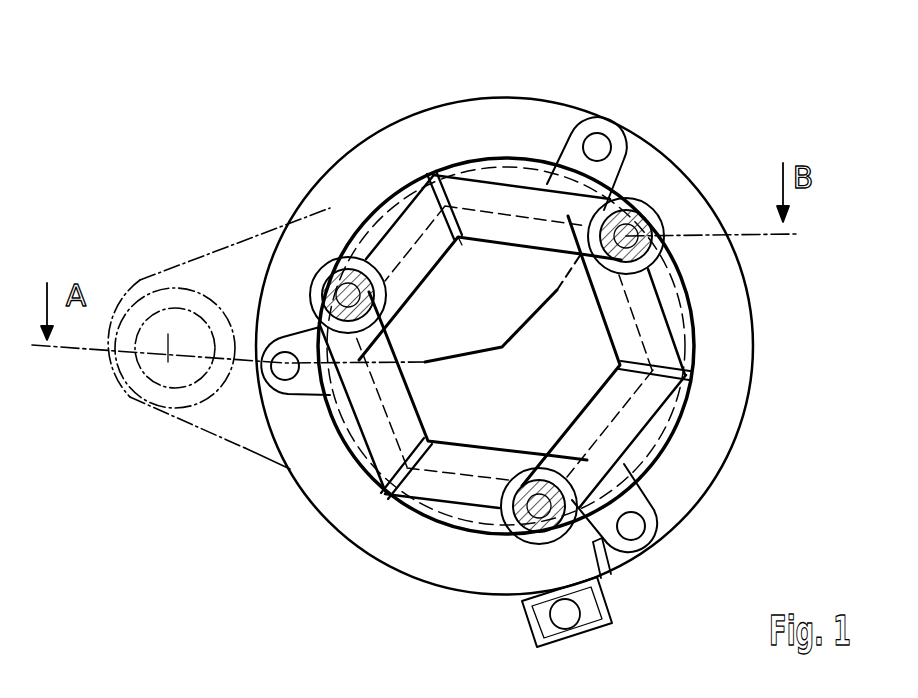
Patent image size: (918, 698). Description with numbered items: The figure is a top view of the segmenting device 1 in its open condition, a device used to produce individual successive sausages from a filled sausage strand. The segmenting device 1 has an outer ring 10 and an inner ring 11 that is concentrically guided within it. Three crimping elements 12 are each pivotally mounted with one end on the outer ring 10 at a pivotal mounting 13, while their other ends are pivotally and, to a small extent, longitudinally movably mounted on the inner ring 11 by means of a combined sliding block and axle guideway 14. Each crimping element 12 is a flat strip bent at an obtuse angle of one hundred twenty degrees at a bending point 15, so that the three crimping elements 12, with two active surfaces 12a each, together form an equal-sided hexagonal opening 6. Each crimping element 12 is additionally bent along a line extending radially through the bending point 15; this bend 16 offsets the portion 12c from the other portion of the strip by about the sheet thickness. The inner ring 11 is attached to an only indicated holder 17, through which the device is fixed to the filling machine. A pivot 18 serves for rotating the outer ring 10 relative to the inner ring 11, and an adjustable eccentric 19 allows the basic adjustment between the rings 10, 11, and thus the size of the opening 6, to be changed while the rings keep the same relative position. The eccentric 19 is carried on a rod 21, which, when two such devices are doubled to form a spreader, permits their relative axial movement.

The segmenting device 1 is at (738, 174).
The opening 6 is at (557, 372).
The outer ring 10 is at (745, 360).
The inner ring 11 is at (357, 233).
The crimping element 12 is at (560, 315).
The active surface 12a is at (517, 251).
The portion of crimping element 12c is at (513, 198).
The pivotal mounting 13 is at (603, 133).
The combined sliding block and axle guideway 14 is at (652, 214).
The bending point 15 is at (461, 243).
The bend 16 is at (468, 168).
The holder 17 is at (207, 423).
The pivot 18 is at (612, 613).
The adjustable eccentric 19 is at (603, 602).
The rod 21 is at (563, 618).